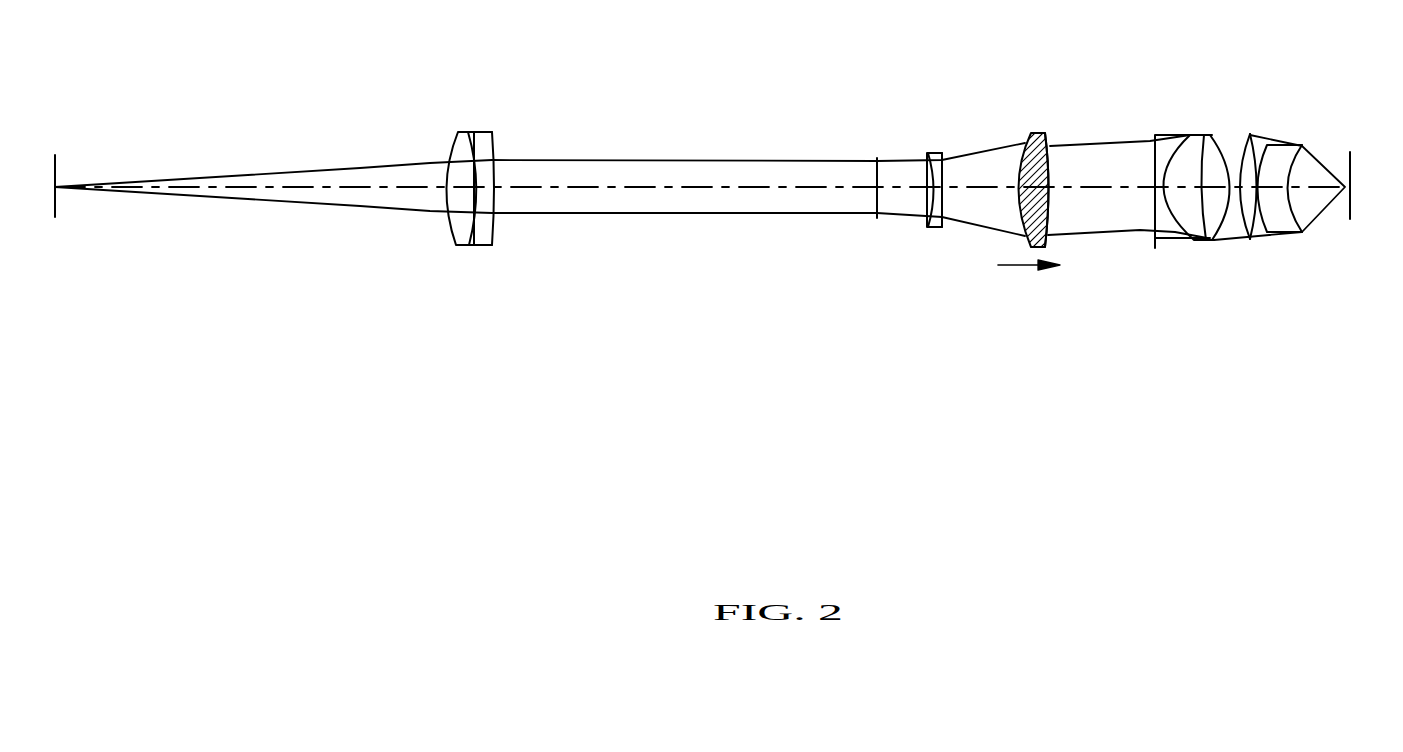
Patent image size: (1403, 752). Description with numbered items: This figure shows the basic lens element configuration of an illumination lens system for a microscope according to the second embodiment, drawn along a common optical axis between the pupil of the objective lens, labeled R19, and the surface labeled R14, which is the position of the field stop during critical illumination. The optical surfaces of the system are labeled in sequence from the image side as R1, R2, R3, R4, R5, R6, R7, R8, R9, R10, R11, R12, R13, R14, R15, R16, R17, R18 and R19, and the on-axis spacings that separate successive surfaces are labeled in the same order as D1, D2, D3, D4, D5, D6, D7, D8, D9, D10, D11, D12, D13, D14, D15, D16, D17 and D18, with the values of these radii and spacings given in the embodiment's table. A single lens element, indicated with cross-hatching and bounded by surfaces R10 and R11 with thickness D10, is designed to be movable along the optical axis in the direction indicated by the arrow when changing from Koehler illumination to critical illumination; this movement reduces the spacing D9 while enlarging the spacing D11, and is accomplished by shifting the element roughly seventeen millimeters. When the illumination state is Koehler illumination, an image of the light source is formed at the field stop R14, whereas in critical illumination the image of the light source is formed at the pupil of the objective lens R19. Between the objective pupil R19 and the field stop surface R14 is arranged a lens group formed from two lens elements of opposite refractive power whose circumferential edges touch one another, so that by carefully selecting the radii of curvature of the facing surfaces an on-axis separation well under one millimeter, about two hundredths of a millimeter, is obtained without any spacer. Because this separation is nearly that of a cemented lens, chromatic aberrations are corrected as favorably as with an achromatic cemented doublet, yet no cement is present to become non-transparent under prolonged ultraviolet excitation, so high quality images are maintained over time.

The image plane R1 is at (1350, 152).
The lens surface R2 is at (1305, 148).
The lens surface R3 is at (1290, 143).
The lens surface R4 is at (1257, 132).
The lens surface R5 is at (1250, 133).
The lens surface R6 is at (1215, 135).
The lens surface R7 is at (1208, 135).
The lens surface R8 is at (1200, 137).
The stop surface R9 is at (1155, 143).
The lens surface R10 is at (1051, 155).
The lens surface R11 is at (1022, 147).
The lens surface R12 is at (943, 155).
The lens surface R13 is at (928, 172).
The field stop R14 is at (874, 172).
The lens surface R15 is at (494, 138).
The lens surface R16 is at (476, 132).
The lens surface R17 is at (466, 135).
The lens surface R18 is at (452, 148).
The pupil of the objective lens R19 is at (55, 153).
The axial distance D1 is at (1312, 190).
The axial distance D2 is at (1300, 233).
The axial distance D3 is at (1268, 240).
The axial distance D4 is at (1248, 242).
The axial distance D5 is at (1232, 243).
The axial distance D6 is at (1210, 245).
The axial distance D7 is at (1183, 241).
The axial distance D8 is at (1150, 243).
The on-axis spacing D9 is at (1100, 192).
The axial distance D10 is at (1034, 235).
The on-axis spacing D11 is at (983, 192).
The axial distance D12 is at (937, 192).
The axial distance D13 is at (903, 205).
The axial distance D14 is at (682, 190).
The axial distance D15 is at (486, 192).
The axial distance D16 is at (473, 190).
The axial distance D17 is at (462, 190).
The axial distance D18 is at (255, 188).